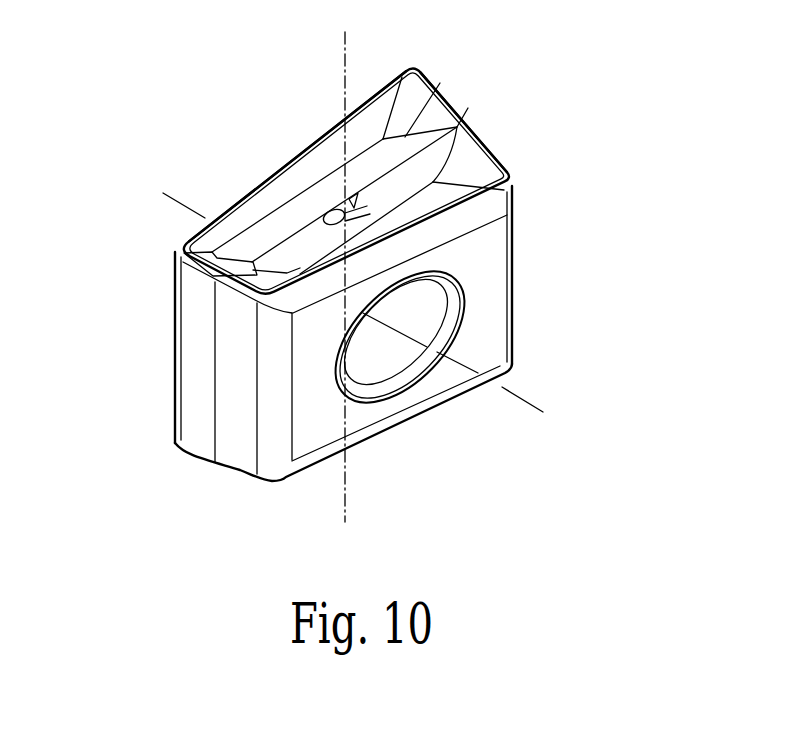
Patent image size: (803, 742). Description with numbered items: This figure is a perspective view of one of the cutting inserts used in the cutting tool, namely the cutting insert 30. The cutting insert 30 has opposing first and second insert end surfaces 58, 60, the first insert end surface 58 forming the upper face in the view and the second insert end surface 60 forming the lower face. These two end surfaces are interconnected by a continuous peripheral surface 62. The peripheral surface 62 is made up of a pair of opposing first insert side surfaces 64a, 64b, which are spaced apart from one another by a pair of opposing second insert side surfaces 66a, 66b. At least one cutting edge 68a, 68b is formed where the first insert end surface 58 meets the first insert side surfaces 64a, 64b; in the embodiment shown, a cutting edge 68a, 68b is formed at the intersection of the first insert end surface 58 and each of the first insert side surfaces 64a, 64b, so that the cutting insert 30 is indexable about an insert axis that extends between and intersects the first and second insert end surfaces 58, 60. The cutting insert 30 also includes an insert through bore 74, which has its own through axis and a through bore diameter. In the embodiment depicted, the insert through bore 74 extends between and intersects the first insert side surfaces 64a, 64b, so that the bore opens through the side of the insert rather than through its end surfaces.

The cutting insert 30 is at (340, 278).
The first insert end surface 58 is at (281, 221).
The second insert end surface 60 is at (243, 474).
The peripheral surface 62 is at (201, 348).
The first insert side surface 64a is at (331, 402).
The first insert side surface 64b is at (177, 300).
The second insert side surface 66a is at (233, 402).
The second insert side surface 66b is at (513, 305).
The cutting edge 68a is at (318, 284).
The cutting edge 68b is at (377, 90).
The insert through bore 74 is at (392, 351).